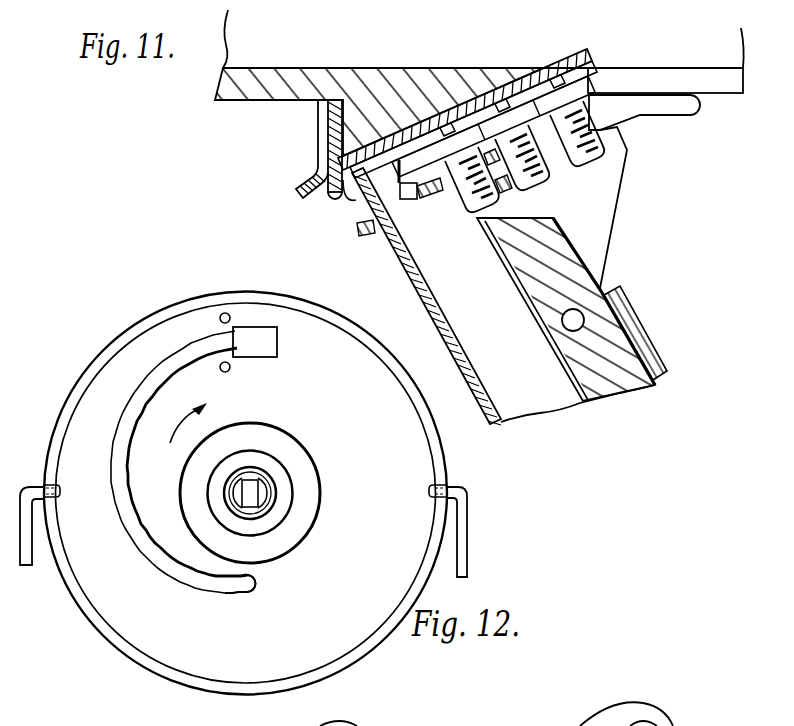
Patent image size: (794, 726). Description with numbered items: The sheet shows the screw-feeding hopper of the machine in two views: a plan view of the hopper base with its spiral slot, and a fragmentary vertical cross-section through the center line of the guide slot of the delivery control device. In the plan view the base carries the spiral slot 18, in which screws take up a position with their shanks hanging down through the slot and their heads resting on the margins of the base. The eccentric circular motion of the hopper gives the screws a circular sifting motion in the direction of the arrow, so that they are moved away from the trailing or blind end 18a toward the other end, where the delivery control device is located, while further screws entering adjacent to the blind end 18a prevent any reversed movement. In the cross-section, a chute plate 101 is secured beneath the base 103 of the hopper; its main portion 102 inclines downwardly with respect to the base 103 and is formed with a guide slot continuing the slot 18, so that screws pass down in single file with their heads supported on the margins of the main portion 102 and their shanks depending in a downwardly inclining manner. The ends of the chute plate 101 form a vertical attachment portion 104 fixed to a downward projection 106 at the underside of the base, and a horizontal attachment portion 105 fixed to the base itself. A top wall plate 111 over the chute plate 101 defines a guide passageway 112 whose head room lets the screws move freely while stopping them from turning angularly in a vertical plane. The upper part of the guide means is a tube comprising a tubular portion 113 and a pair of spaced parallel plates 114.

In FIG. 11, the chute plate 101 is at (336, 200).
In FIG. 11, the main portion of the chute plate 102 is at (415, 170).
In FIG. 11, the base of the hopper 103 is at (660, 70).
In FIG. 11, the vertical attachment portion 104 is at (328, 121).
In FIG. 11, the horizontal attachment portion 105 is at (652, 120).
In FIG. 11, the downward projection 106 is at (293, 78).
In FIG. 11, the plate (top wall member) 111 is at (372, 136).
In FIG. 11, the guide passageway 112 is at (500, 78).
In FIG. 11, the tubular portion 113 is at (501, 424).
In FIG. 11, the spaced parallel plates 114 is at (609, 187).
In FIG. 12, the slot 18 is at (153, 378).
In FIG. 12, the blind end 18a is at (250, 591).